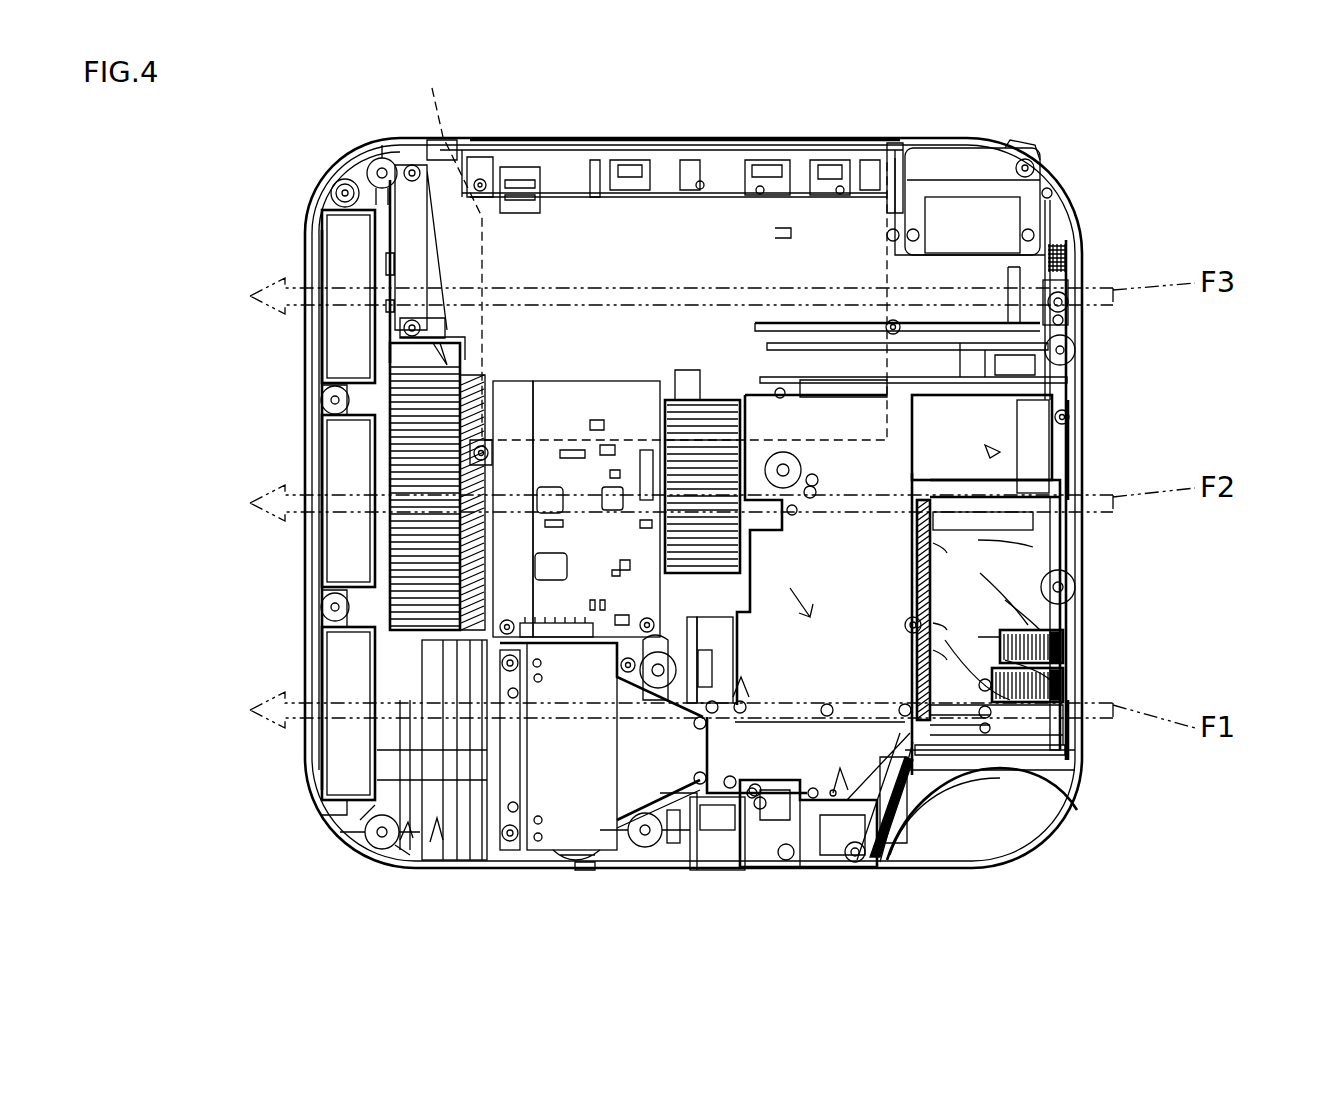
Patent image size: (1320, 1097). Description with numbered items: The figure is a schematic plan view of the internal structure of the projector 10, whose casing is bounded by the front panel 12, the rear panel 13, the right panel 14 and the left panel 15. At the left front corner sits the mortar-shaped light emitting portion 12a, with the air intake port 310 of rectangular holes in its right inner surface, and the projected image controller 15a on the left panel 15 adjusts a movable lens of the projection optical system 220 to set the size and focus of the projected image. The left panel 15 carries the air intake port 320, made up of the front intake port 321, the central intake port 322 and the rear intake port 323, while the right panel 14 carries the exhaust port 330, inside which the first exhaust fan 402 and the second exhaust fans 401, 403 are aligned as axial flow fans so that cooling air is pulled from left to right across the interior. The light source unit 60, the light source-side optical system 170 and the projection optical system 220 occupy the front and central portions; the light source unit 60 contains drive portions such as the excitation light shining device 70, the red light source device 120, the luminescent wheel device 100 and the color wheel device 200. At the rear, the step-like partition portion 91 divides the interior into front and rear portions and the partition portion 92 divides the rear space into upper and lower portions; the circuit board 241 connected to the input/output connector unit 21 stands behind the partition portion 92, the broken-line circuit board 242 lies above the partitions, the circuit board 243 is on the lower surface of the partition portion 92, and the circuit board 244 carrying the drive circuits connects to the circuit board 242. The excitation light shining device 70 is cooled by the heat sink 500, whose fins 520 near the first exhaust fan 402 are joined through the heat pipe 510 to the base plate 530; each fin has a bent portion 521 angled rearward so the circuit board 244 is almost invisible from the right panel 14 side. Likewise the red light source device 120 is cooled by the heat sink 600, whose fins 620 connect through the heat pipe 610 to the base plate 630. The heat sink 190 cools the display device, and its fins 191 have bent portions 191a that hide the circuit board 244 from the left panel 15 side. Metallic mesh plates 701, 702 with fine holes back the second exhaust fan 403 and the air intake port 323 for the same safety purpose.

The projector 10 is at (1119, 157).
The front panel 12 is at (457, 868).
The light emitting portion 12a is at (1000, 830).
The rear panel 13 is at (637, 140).
The right panel 14 is at (308, 243).
The left panel 15 is at (1065, 660).
The projected image controller 15a is at (1067, 680).
The input/output connector unit 21 is at (698, 127).
The light source unit 60 is at (604, 832).
The excitation light shining device 70 is at (421, 878).
The partition portion 91 is at (805, 323).
The partition portion 92 is at (808, 233).
The luminescent wheel device 100 is at (840, 772).
The red light source device 120 is at (745, 690).
The light source-side optical system 170 is at (998, 452).
The heat sink 190 is at (1040, 548).
The fins 191 is at (898, 578).
The bent portion 191a is at (898, 551).
The color wheel device 200 is at (678, 543).
The projection optical system 220 is at (1030, 596).
The circuit board 241 is at (607, 193).
The circuit board 242 is at (642, 246).
The circuit board 243 is at (783, 233).
The circuit board 244 is at (597, 423).
The air intake port 310 is at (893, 845).
The air intake port 320 is at (1080, 345).
The air intake port 321 is at (1078, 735).
The air intake port 322 is at (1080, 470).
The air intake port 323 is at (1080, 260).
The air exhaust port 330 is at (310, 463).
The second exhaust fan 401 is at (340, 668).
The first exhaust fan 402 is at (345, 525).
The second exhaust fan 403 is at (345, 340).
The heat sink 500 is at (408, 824).
The heat pipe 510 is at (402, 808).
The fins 520 is at (390, 545).
The bent portion 521 is at (445, 362).
The base plate 530 is at (437, 750).
The heat sink 600 is at (650, 857).
The heat pipe 610 is at (615, 832).
The fins 620 is at (713, 398).
The base plate 630 is at (693, 873).
The metallic mesh plate 701 is at (385, 262).
The metallic mesh plate 702 is at (1073, 280).